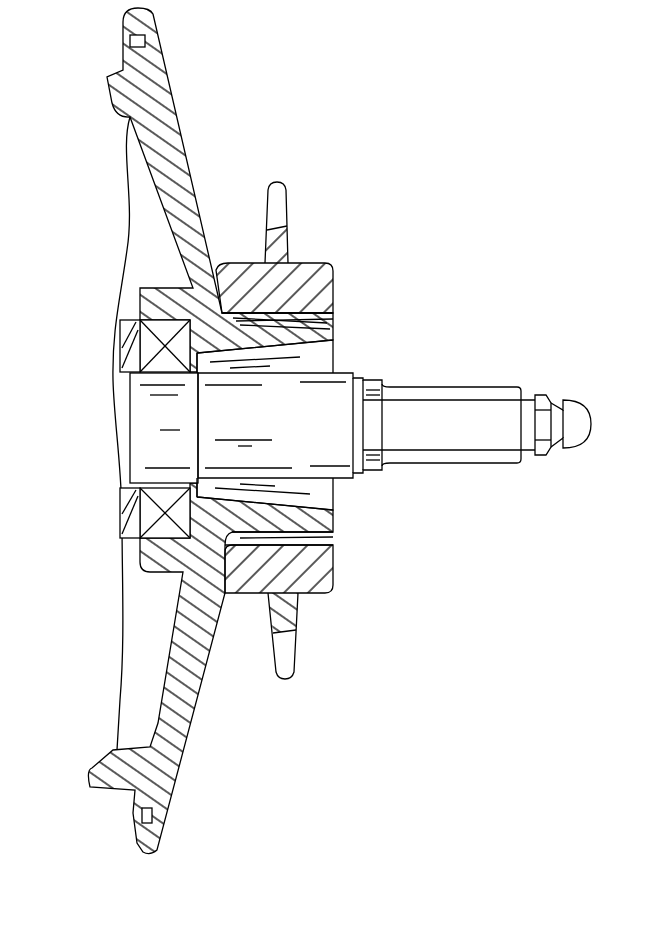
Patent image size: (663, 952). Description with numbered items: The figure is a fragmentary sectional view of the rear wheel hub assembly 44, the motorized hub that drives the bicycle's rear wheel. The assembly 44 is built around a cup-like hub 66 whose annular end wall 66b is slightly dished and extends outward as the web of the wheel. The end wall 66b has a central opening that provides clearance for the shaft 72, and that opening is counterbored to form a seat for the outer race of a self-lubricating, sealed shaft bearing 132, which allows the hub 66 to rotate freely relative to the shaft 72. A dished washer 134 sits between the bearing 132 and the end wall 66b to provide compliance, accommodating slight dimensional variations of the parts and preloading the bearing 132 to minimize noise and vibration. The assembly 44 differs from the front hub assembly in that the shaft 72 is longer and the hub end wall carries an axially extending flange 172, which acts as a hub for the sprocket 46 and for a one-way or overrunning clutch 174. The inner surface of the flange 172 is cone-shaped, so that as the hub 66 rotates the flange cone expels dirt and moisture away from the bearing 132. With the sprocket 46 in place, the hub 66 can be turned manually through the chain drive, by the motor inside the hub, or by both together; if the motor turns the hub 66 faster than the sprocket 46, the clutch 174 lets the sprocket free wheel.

The rear wheel hub assembly 44 is at (208, 85).
The sprocket 46 is at (318, 280).
The hub 66 is at (108, 77).
The annular end wall 66b is at (178, 712).
The shaft 72 is at (336, 387).
The shaft bearing 132 is at (128, 331).
The dished washer 134 is at (128, 363).
The axially extending flange 172 is at (326, 532).
The one-way clutch 174 is at (310, 323).